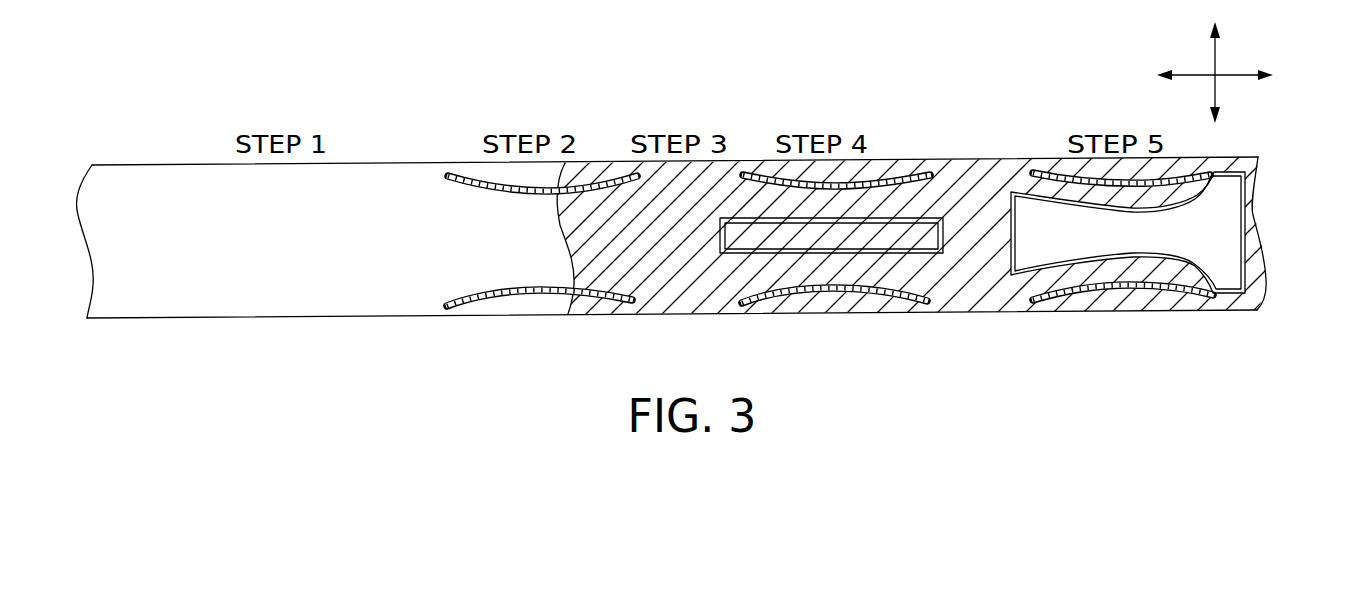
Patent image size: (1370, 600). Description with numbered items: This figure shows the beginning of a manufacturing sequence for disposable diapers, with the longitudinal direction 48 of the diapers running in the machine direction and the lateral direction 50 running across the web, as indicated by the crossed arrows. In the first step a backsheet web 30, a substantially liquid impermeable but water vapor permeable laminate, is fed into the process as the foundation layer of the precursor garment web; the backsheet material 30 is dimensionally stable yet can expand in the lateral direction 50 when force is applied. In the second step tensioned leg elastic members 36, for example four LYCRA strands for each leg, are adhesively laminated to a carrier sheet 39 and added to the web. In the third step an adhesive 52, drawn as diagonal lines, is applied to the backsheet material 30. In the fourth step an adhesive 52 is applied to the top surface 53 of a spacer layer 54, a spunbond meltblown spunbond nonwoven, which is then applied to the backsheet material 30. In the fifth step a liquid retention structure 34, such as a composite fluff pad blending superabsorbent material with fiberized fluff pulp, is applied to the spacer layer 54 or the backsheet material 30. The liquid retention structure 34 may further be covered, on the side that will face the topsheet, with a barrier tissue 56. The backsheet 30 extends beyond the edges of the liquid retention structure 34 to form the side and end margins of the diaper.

The backsheet 30 is at (238, 297).
The liquid retention structure 34 is at (886, 255).
The leg elastic members 36 is at (458, 315).
The carrier sheet 39 is at (557, 293).
The longitudinal direction 48 is at (1240, 78).
The lateral direction 50 is at (1217, 58).
The adhesive 52 is at (650, 273).
The top surface 53 is at (850, 237).
The spacer layer 54 is at (902, 250).
The barrier tissue 56 is at (1222, 202).